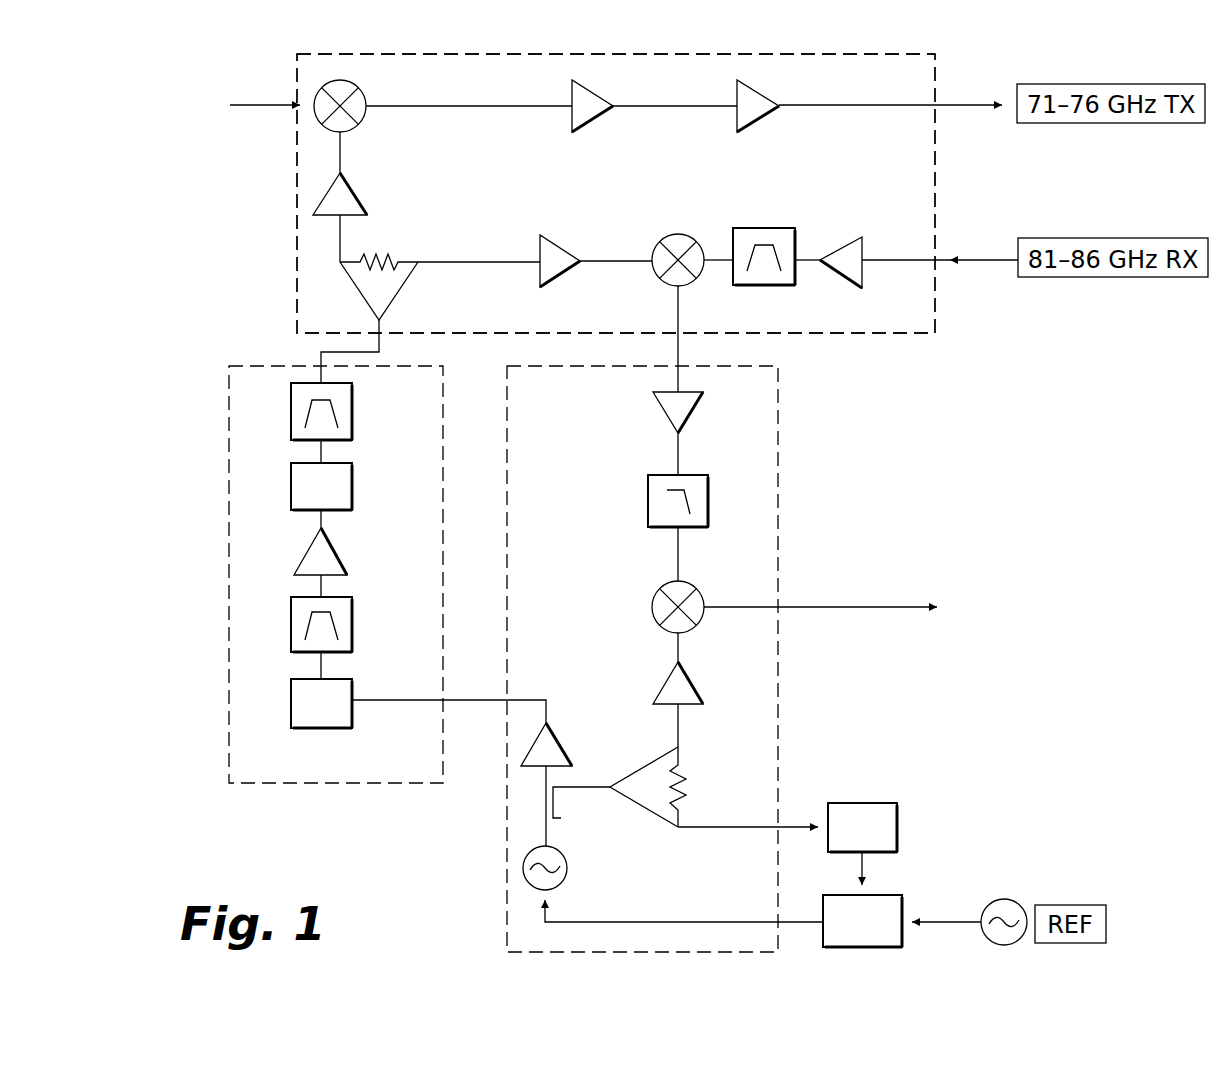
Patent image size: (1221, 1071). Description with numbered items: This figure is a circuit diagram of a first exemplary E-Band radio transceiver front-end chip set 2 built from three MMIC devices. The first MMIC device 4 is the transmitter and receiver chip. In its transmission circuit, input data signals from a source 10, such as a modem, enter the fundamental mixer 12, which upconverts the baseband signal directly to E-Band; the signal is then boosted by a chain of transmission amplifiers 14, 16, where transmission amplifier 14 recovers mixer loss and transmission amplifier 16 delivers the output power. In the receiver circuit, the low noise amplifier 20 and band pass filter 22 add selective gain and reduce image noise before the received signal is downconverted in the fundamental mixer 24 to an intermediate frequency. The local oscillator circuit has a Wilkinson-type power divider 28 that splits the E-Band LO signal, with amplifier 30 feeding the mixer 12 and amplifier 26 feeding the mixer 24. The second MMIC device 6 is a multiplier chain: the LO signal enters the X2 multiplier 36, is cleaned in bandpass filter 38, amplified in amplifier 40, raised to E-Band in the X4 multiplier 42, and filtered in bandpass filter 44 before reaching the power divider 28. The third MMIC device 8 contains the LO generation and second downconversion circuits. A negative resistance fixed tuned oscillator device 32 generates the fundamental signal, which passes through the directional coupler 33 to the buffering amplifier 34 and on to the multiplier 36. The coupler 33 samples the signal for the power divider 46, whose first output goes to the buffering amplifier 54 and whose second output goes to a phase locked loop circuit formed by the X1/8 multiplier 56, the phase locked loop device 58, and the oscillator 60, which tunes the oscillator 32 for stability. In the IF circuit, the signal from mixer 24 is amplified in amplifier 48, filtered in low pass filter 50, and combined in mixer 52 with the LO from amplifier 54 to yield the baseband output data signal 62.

The E-Band transmitter front-end chip set 2 is at (122, 83).
The first MMIC device 4 is at (283, 243).
The second MMIC device 6 is at (215, 521).
The third MMIC device 8 is at (793, 477).
The source 10 is at (252, 107).
The fundamental mixer 12 is at (360, 87).
The transmission amplifier 14 is at (598, 114).
The transmission amplifier 16 is at (764, 113).
The low noise amplifier 20 is at (848, 278).
The band pass filter 22 is at (757, 228).
The fundamental mixer 24 is at (680, 234).
The amplifier 26 is at (561, 246).
The power divider 28 is at (392, 252).
The amplifier 30 is at (360, 190).
The negative resistance fixed tuned oscillator device 32 is at (563, 884).
The directional coupler 33 is at (558, 803).
The buffering amplifier 34 is at (562, 740).
The X2 multiplier 36 is at (352, 723).
The bandpass filter 38 is at (356, 612).
The amplifier 40 is at (337, 543).
The X4 multiplier 42 is at (356, 482).
The bandpass filter 44 is at (356, 404).
The power divider 46 is at (688, 778).
The amplifier 48 is at (696, 412).
The low pass filter 50 is at (704, 478).
The mixer 52 is at (698, 588).
The buffering amplifier 54 is at (692, 676).
The X1/8 multiplier 56 is at (871, 803).
The phase locked loop device 58 is at (877, 895).
The oscillator 60 is at (1000, 898).
The output data signal 62 is at (886, 604).